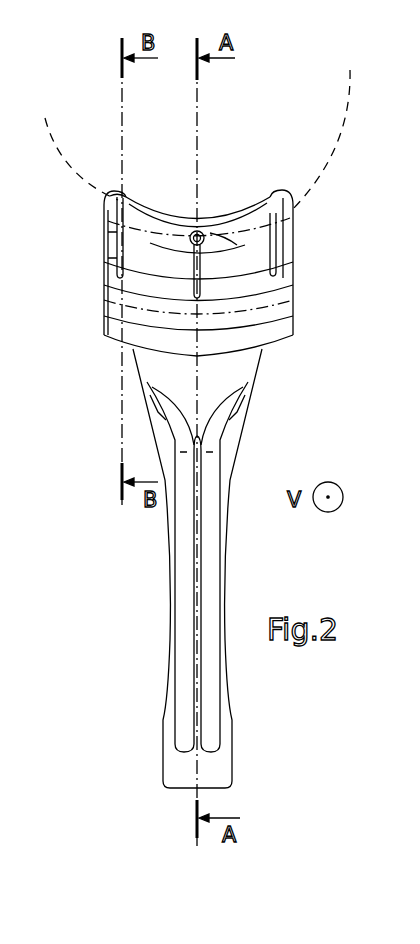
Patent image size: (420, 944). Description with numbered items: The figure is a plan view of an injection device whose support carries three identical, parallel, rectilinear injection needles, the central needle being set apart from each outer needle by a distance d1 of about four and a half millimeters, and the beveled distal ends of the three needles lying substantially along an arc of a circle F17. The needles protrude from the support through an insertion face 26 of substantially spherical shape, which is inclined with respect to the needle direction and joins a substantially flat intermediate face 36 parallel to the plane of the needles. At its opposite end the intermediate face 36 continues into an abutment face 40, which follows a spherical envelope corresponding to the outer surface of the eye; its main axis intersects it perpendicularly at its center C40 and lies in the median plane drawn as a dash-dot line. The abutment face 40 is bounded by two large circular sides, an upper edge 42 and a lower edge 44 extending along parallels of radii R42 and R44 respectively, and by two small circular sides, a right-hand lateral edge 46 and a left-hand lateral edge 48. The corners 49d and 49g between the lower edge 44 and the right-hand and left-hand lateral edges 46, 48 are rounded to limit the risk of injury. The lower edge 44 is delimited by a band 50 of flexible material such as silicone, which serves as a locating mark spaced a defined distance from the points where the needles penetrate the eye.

The insertion face 26 is at (293, 310).
The intermediate face 36 is at (112, 283).
The abutment face 40 is at (282, 193).
The upper edge 42 is at (132, 258).
The lower edge 44 is at (237, 208).
The right-hand lateral edge 46 is at (296, 214).
The left-hand lateral edge 48 is at (103, 213).
The corner 49g is at (113, 190).
The corner 49d is at (288, 197).
The band 50 is at (157, 203).
The center of the abutment face C40 is at (278, 256).
The radius of the parallel of the lower edge R44 is at (179, 208).
The radius of the parallel of the upper edge R42 is at (235, 239).
The arc of a circle F17 is at (350, 97).
The distance between needles d1 is at (195, 99).